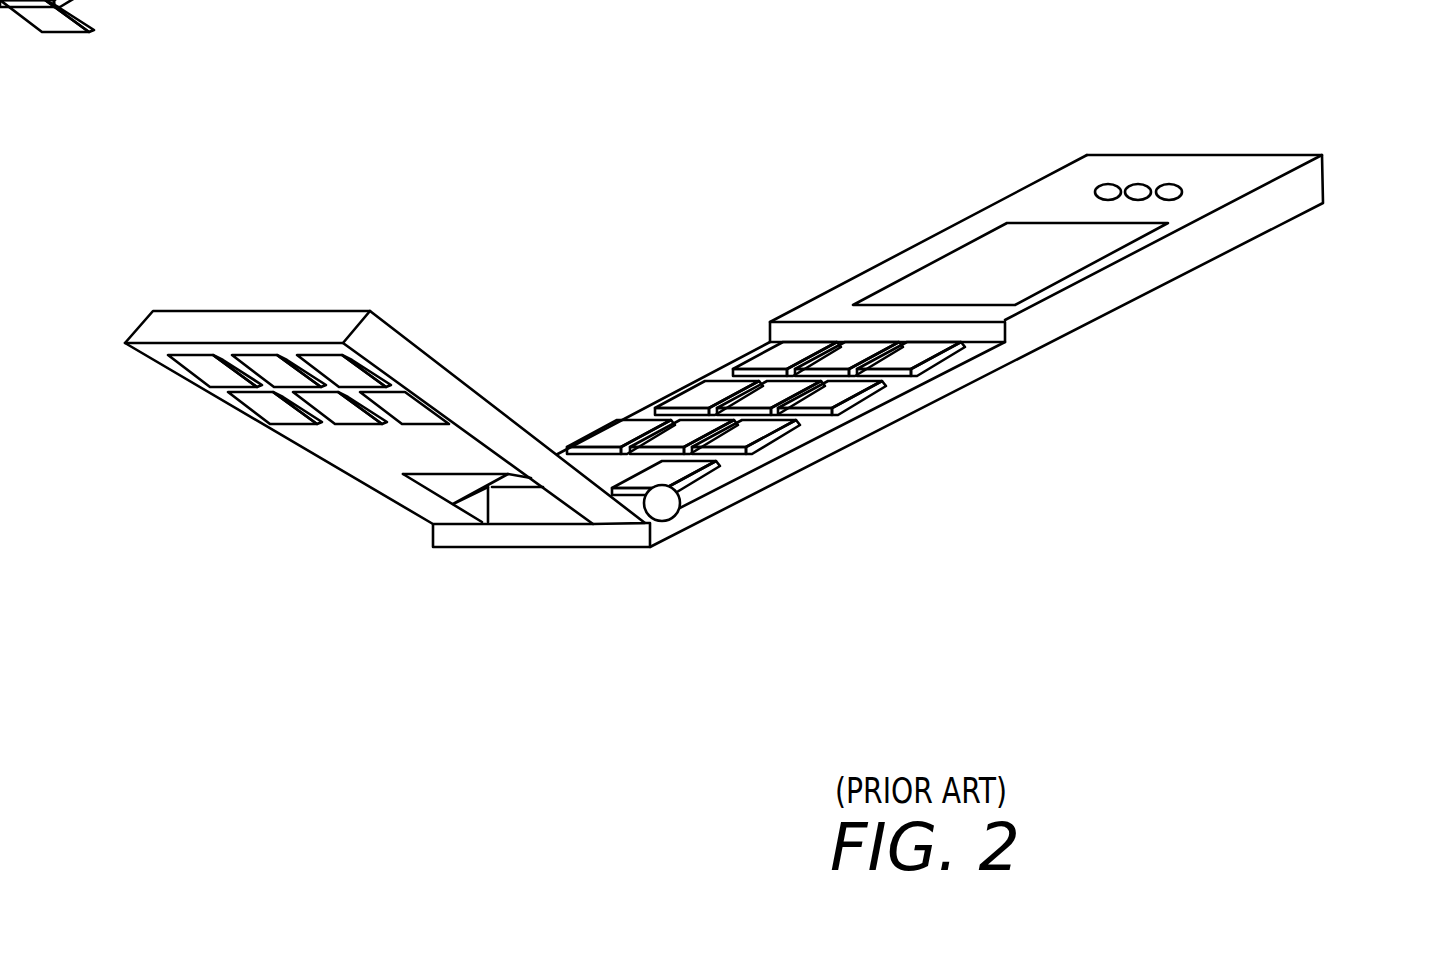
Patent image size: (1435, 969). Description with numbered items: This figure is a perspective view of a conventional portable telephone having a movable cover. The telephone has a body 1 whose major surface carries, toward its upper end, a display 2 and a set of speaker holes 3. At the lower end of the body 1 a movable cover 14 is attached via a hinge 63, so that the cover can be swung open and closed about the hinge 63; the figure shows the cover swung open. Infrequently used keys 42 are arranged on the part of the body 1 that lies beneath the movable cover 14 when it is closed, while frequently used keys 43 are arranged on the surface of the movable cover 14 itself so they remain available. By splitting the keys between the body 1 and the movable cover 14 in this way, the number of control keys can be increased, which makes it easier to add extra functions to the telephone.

The body 1 is at (1097, 293).
The display 2 is at (917, 290).
The speaker holes 3 is at (1138, 183).
The movable cover 14 is at (170, 331).
The infrequently used keys 42 is at (830, 392).
The frequently used keys 43 is at (277, 412).
The hinge 63 is at (665, 501).